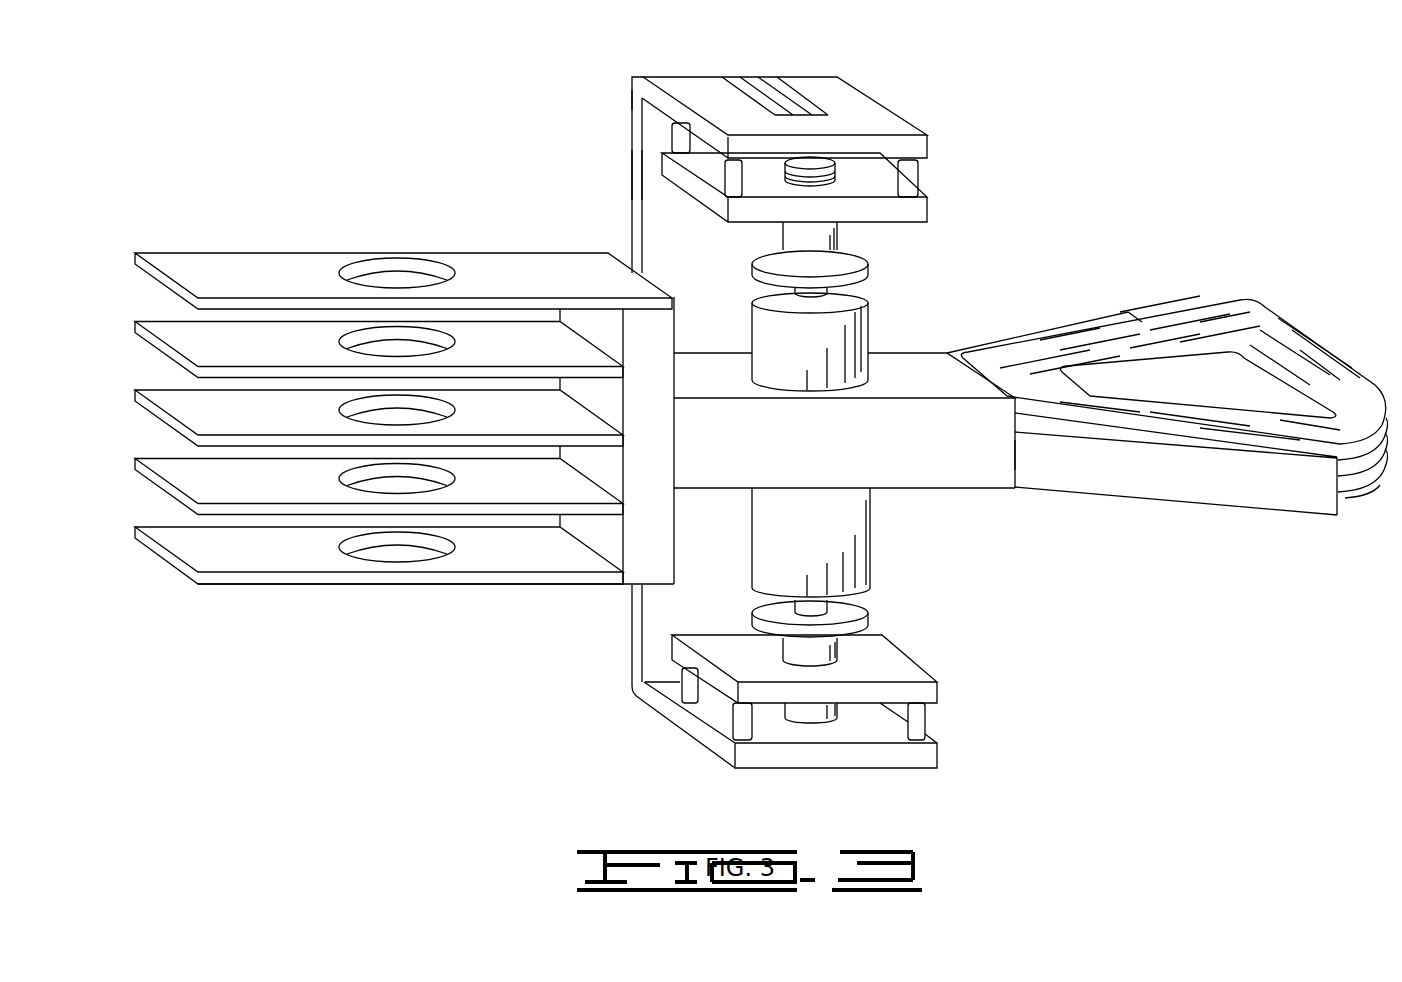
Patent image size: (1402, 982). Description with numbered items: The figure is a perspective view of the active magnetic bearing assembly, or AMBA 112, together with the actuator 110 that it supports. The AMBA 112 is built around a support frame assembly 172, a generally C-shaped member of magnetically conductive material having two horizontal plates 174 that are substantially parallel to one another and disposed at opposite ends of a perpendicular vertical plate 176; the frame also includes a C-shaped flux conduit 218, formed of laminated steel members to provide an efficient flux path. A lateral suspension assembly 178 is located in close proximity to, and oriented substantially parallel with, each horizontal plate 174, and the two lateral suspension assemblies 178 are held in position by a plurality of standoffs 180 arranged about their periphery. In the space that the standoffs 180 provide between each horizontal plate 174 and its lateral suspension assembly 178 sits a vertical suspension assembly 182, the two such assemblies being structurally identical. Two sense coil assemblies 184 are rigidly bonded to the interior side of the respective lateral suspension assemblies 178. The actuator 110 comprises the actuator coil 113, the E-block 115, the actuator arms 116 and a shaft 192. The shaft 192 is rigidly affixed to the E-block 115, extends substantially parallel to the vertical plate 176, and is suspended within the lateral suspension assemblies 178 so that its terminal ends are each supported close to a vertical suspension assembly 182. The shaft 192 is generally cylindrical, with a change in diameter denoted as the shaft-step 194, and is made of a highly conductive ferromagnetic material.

The actuator 110 is at (1054, 604).
The AMBA 112 is at (418, 77).
The actuator coil 113 is at (1287, 350).
The E-block 115 is at (997, 487).
The actuator arms 116 is at (168, 264).
The support frame assembly 172 is at (626, 123).
The horizontal plates 174 is at (826, 90).
The vertical plate 176 is at (637, 220).
The lateral suspension assemblies 178 is at (928, 210).
The standoffs 180 is at (914, 173).
The vertical suspension assemblies 182 is at (813, 165).
The sense coil assemblies 184 is at (868, 266).
The shaft 192 is at (845, 525).
The shaft-step 194 is at (848, 304).
The flux conduit 218 is at (772, 90).